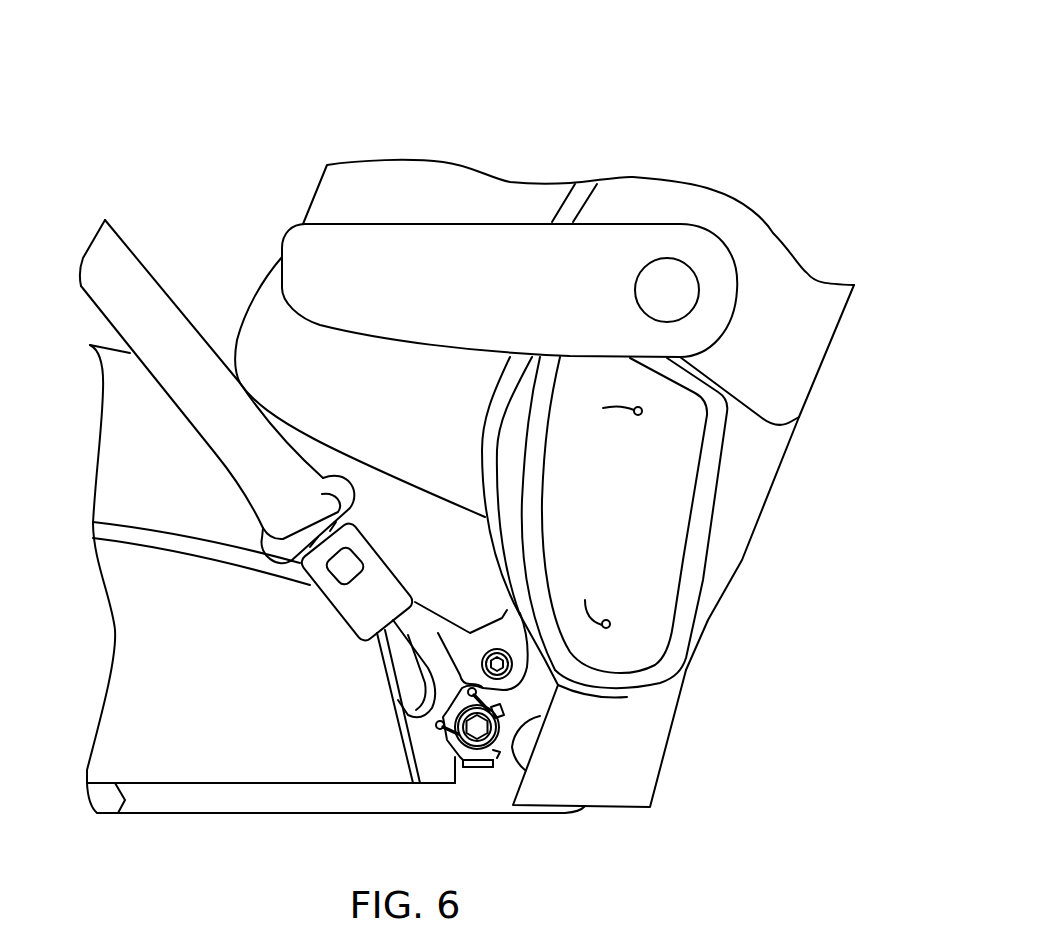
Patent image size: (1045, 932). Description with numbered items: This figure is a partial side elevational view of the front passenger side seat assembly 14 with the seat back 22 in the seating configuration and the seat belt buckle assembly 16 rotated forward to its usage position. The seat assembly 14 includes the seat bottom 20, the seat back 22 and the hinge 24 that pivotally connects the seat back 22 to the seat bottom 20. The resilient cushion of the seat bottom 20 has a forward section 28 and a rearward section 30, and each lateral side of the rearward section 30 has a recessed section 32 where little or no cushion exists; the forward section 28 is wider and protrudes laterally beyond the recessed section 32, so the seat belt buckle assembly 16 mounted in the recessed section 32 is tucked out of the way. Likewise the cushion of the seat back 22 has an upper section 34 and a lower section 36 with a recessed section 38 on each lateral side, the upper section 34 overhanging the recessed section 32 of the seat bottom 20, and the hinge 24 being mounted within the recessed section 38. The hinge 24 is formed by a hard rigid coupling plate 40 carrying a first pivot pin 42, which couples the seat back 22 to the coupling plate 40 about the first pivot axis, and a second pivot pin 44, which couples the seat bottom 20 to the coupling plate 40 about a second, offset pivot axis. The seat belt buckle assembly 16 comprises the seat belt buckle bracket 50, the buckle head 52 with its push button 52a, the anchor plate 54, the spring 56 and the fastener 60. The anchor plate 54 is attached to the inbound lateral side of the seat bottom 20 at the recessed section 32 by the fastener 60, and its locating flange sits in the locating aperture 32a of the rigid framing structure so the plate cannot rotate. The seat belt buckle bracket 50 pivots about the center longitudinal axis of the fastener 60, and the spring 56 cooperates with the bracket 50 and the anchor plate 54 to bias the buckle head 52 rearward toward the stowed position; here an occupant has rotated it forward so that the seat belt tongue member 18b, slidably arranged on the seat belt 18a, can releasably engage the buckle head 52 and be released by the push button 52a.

The seat assembly 14 is at (645, 78).
The seat belt buckle assembly 16 is at (416, 689).
The seat belt 18a is at (138, 260).
The seat belt tongue member 18b is at (337, 490).
The seat bottom 20 is at (100, 345).
The seat back 22 is at (316, 194).
The hinge 24 is at (714, 617).
The forward section 28 is at (135, 580).
The rearward section 30 is at (442, 573).
The recessed section 32 is at (493, 777).
The locating aperture 32a is at (473, 768).
The upper section 34 is at (832, 357).
The lower section 36 is at (764, 513).
The recessed section 38 is at (750, 453).
The coupling plate 40 is at (663, 542).
The first pivot pin 42 is at (610, 624).
The second pivot pin 44 is at (642, 415).
The seat belt buckle bracket 50 is at (437, 650).
The buckle head 52 is at (340, 617).
The push button 52a is at (343, 565).
The anchor plate 54 is at (462, 753).
The spring 56 is at (438, 735).
The fastener 60 is at (485, 730).